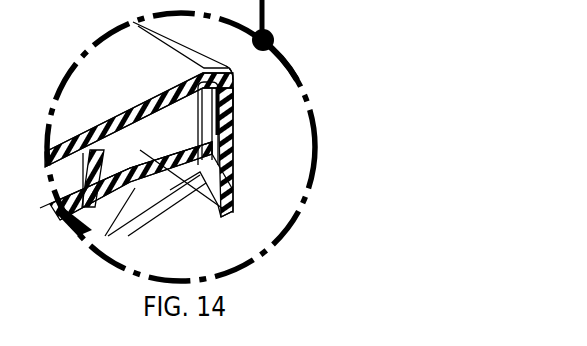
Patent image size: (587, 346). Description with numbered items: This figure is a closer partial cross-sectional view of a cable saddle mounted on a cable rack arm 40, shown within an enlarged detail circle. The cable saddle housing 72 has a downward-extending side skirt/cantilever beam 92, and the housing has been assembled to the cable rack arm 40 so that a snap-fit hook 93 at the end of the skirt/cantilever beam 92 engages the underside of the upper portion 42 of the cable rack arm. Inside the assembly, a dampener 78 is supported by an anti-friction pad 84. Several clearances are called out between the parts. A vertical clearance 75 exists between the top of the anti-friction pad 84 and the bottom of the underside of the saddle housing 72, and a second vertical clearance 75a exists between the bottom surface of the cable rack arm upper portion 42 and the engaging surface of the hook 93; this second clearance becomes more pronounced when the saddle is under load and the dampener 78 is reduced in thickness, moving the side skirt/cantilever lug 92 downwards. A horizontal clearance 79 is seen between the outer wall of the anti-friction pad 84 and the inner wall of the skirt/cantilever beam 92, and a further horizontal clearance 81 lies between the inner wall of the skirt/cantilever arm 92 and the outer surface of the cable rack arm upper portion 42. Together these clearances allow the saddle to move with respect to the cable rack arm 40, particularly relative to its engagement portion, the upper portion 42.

The cable rack arm 40 is at (181, 140).
The cable saddle housing 72 is at (137, 79).
The dampener 78 is at (149, 154).
The upper portion of the cable rack arm 42 is at (128, 210).
The skirt/cantilever beam 92 is at (225, 131).
The anti-friction pad 84 is at (205, 138).
The horizontal clearance 81 is at (213, 157).
The snap-fit hook 93 is at (230, 179).
The vertical clearance 75 is at (237, 81).
The horizontal clearance 79 is at (233, 108).
The vertical clearance 75a is at (206, 172).